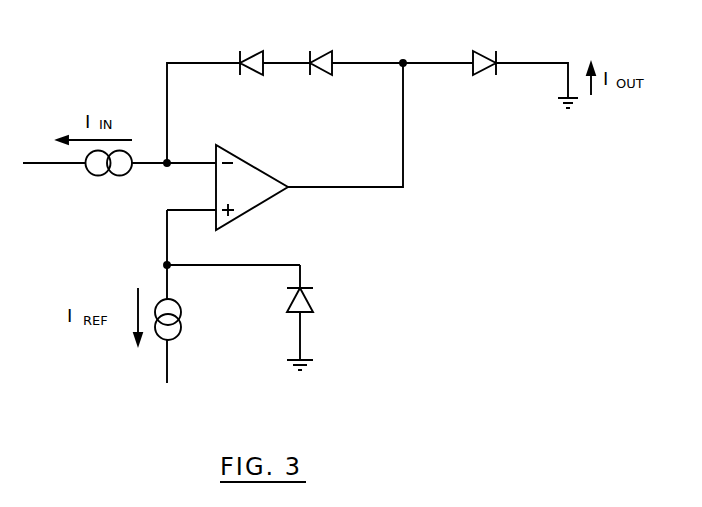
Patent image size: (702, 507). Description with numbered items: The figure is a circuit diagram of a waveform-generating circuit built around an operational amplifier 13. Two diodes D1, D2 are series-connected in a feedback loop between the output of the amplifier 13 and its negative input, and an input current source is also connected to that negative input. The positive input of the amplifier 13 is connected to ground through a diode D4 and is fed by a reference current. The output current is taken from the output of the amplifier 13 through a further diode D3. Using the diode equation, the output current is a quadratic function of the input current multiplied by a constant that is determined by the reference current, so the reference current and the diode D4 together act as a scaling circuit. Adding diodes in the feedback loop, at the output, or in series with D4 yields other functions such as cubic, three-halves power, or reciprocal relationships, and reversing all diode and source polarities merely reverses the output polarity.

The operational amplifier 13 is at (258, 207).
The diode D1 is at (252, 52).
The diode D2 is at (321, 52).
The diode D3 is at (484, 51).
The diode D4 is at (316, 317).